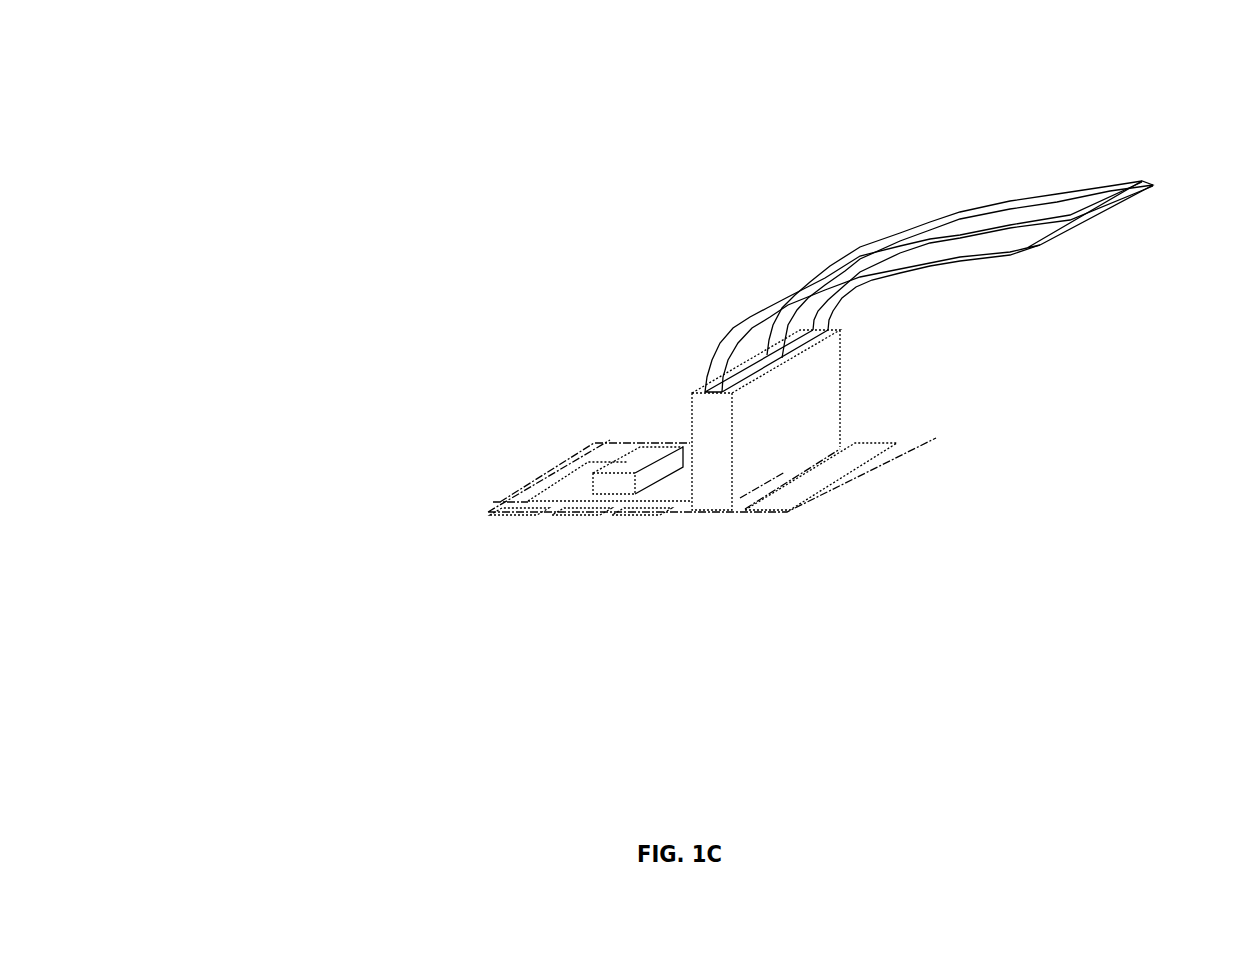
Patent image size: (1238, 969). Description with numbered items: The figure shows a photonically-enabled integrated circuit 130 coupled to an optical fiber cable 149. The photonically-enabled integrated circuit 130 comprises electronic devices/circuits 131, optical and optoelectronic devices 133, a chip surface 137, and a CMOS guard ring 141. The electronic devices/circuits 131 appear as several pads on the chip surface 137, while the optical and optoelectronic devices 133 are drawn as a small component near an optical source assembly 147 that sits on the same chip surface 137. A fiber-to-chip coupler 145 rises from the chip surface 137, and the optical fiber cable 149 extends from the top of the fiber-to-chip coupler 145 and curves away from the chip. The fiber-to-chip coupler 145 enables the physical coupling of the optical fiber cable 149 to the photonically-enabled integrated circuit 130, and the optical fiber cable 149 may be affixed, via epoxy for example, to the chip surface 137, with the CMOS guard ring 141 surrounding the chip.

The photonically-enabled integrated circuit 130 is at (311, 129).
The electronic devices/circuits 131 is at (630, 517).
The optical and optoelectronic devices 133 is at (587, 498).
The chip surface 137 is at (571, 473).
The CMOS guard ring 141 is at (940, 428).
The fiber-to-chip coupler 145 is at (808, 430).
The optical source assembly 147 is at (646, 453).
The optical fiber cable 149 is at (979, 206).